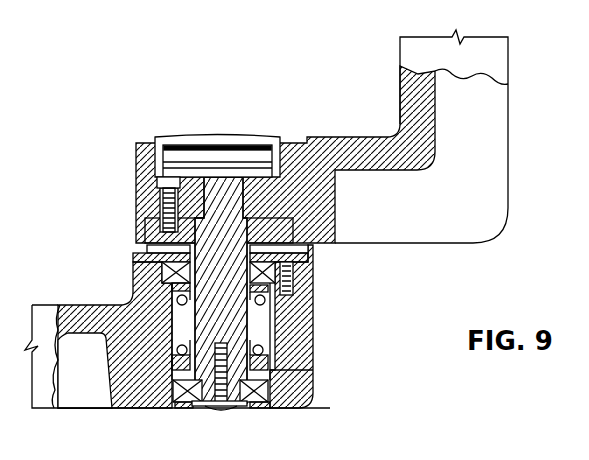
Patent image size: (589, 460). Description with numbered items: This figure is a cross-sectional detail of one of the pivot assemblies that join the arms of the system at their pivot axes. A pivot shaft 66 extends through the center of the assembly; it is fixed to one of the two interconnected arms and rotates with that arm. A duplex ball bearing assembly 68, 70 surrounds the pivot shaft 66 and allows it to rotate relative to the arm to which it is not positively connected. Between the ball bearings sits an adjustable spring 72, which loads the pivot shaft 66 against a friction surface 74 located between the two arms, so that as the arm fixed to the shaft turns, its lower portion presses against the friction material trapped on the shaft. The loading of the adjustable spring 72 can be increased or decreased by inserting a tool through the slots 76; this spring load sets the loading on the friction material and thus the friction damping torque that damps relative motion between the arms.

The pivot shaft 66 is at (278, 325).
The duplex ball bearing assembly 68 is at (260, 408).
The duplex ball bearing assembly 70 is at (178, 297).
The adjustable spring 72 is at (300, 303).
The friction surface 74 is at (150, 249).
The slots 76 is at (275, 365).